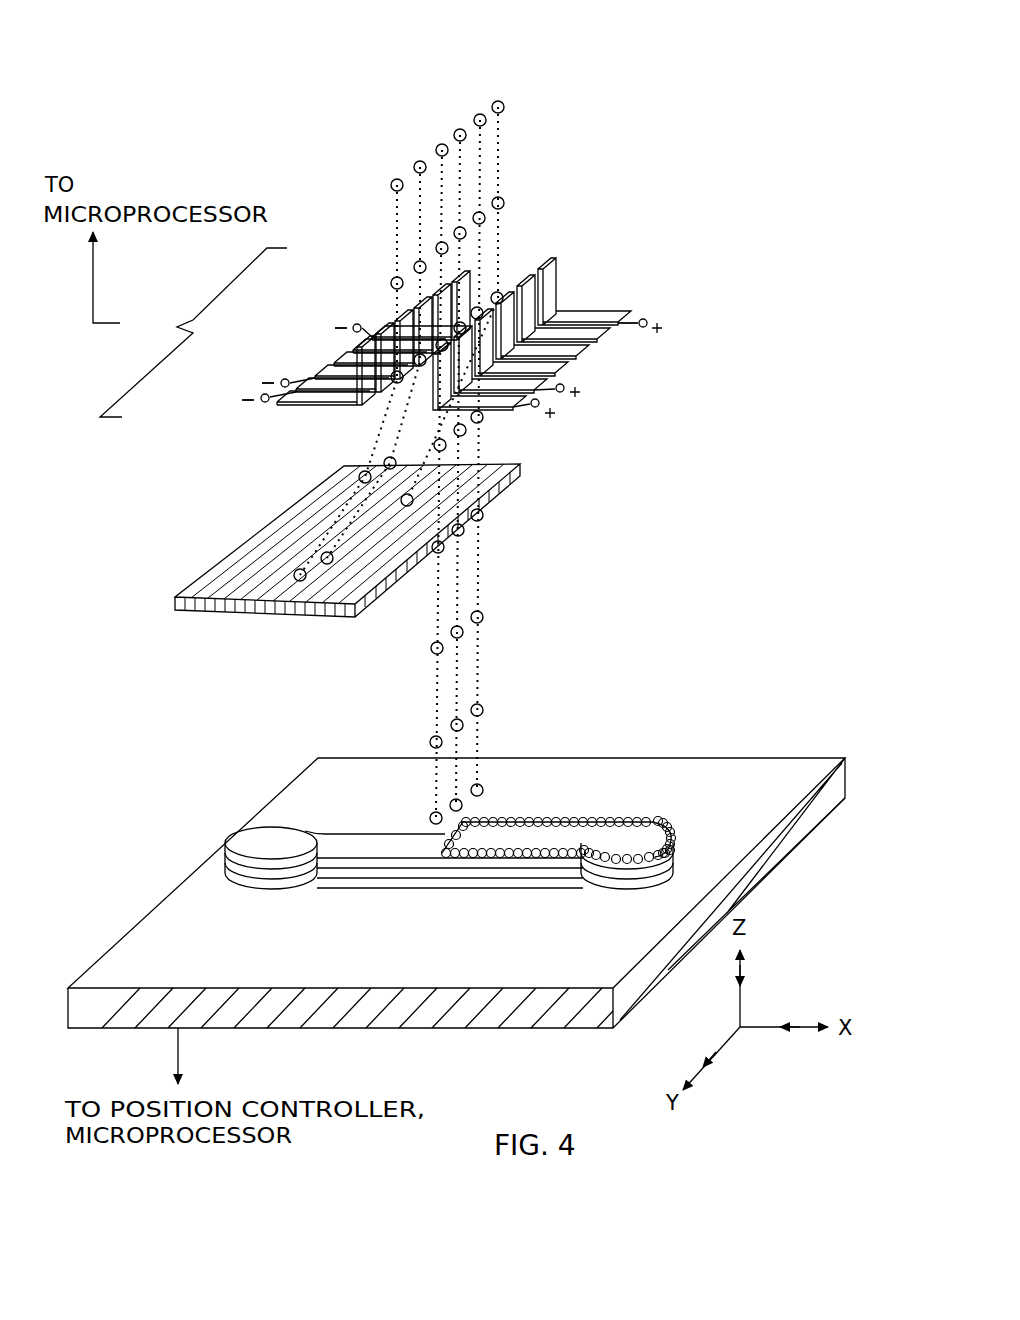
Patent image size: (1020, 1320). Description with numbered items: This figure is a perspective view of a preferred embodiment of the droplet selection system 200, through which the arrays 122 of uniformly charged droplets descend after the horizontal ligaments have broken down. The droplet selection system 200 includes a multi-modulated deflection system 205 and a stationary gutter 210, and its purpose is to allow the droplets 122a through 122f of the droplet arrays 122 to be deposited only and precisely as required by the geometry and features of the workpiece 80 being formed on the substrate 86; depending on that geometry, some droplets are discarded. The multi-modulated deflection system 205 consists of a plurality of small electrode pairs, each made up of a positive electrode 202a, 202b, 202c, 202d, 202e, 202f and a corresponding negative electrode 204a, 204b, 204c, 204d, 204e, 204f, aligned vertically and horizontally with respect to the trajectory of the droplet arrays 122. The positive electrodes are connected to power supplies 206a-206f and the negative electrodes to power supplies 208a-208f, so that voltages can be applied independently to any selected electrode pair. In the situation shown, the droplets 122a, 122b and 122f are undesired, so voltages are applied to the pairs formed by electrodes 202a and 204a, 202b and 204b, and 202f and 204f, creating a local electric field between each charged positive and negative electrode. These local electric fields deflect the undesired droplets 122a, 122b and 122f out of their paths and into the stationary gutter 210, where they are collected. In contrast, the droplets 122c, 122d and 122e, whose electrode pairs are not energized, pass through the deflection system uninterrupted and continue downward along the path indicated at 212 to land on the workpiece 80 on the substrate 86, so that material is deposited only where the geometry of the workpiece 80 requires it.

The droplet selection system 200 is at (676, 92).
The arrays of uniformly charged droplets 122 is at (390, 189).
The droplet 122a is at (390, 183).
The droplet 122b is at (413, 163).
The droplet 122c is at (436, 146).
The droplet 122d is at (455, 131).
The droplet 122e is at (477, 113).
The droplet 122f is at (502, 102).
The positive electrode 202a is at (515, 410).
The positive electrode 202b is at (535, 397).
The positive electrode 202c is at (560, 372).
The positive electrode 202d is at (580, 357).
The positive electrode 202e is at (600, 340).
The positive electrode 202f is at (573, 320).
The negative electrode 204a is at (345, 412).
The negative electrode 204b is at (258, 393).
The negative electrode 204c is at (320, 375).
The negative electrode 204d is at (336, 362).
The negative electrode 204e is at (355, 349).
The negative electrode 204f is at (382, 326).
The multi-modulated deflection system 205 is at (193, 332).
The power supplies 206a-206f is at (667, 328).
The power supplies 208a-208f is at (262, 402).
The stationary gutter 210 is at (200, 610).
The pipette tips / dispensing paths 212 is at (493, 692).
The substrate 86 is at (165, 885).
The workpiece 80 is at (680, 797).